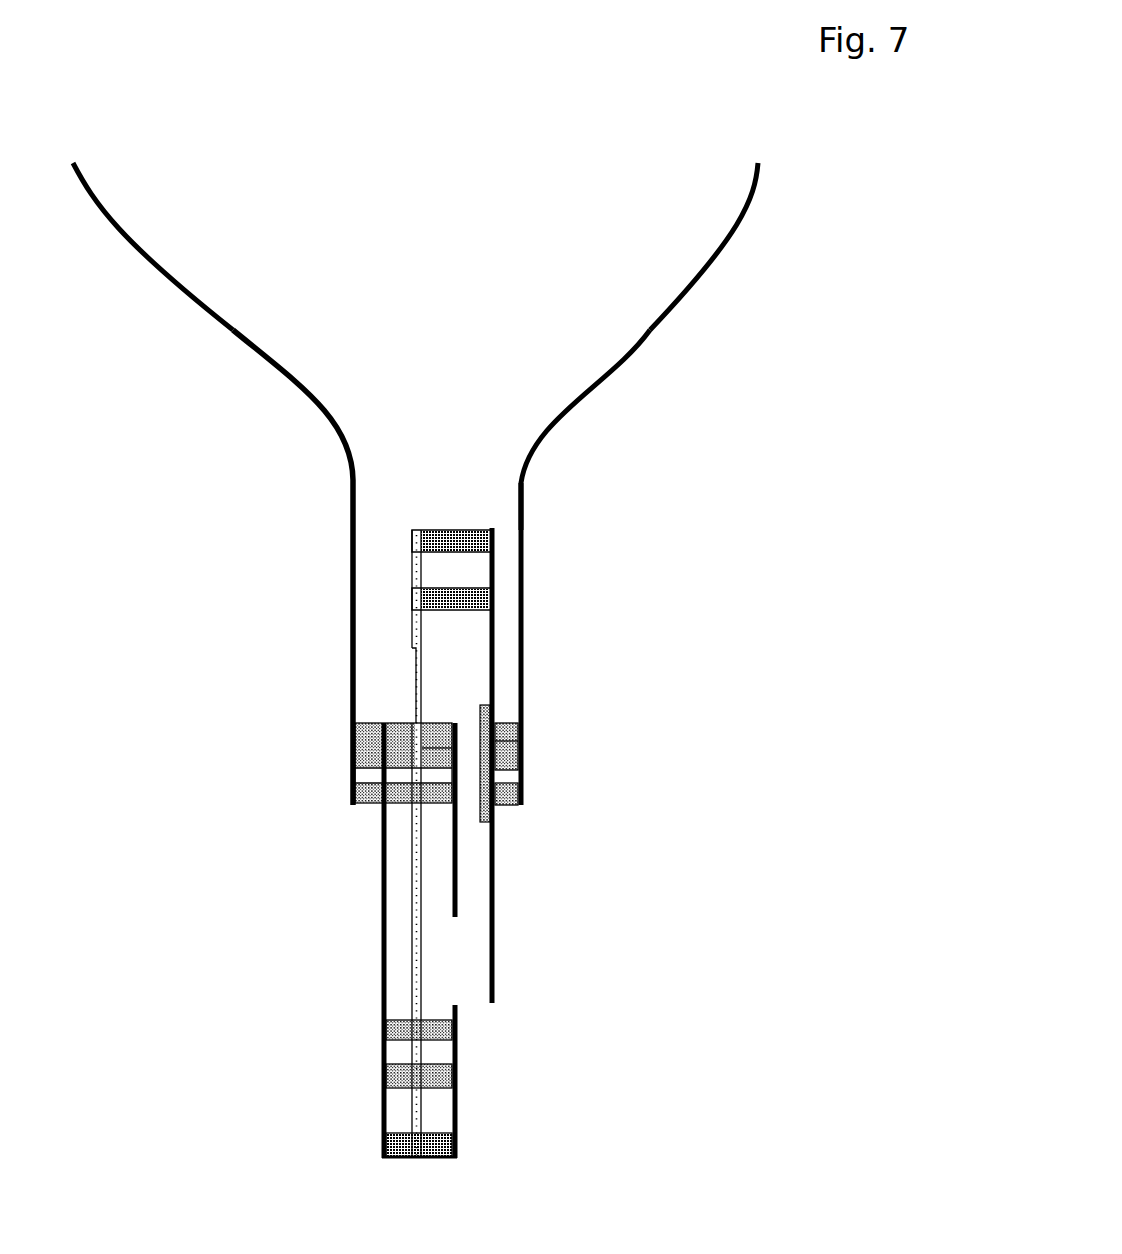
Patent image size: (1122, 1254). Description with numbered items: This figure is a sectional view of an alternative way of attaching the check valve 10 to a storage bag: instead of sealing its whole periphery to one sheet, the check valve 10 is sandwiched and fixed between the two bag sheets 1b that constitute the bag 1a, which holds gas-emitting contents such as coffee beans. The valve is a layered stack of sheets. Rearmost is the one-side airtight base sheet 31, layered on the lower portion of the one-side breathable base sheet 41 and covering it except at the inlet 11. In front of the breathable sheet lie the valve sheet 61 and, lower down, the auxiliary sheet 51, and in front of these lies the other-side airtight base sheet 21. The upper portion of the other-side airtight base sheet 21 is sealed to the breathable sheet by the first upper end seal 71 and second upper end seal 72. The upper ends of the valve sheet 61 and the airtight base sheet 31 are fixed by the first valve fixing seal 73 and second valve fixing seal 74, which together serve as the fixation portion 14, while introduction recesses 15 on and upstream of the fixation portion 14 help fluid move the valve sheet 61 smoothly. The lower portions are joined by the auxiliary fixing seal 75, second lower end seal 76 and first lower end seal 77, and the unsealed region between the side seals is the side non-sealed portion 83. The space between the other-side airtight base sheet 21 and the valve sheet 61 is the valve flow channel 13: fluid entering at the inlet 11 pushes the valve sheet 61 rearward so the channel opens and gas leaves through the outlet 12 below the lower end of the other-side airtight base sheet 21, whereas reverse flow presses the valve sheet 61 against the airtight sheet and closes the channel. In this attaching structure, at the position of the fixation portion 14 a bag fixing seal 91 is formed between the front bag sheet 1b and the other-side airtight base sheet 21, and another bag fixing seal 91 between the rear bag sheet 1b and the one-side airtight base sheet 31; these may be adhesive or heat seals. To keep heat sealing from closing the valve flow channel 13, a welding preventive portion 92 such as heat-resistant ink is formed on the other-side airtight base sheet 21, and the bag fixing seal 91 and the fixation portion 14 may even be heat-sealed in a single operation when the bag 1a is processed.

The bag 1a is at (745, 216).
The bag sheet 1b is at (233, 330).
The check valve 10 is at (492, 528).
The inlet 11 is at (420, 628).
The first upper end seal 71 is at (443, 540).
The second upper end seal 72 is at (438, 598).
The side non-sealed portion 83 is at (438, 565).
The introduction recess 15 is at (412, 702).
The one-side breathable base sheet 41 is at (438, 645).
The other-side airtight base sheet 21 is at (495, 637).
The welding preventive portion 92 is at (490, 717).
The bag fixing seal 91 is at (365, 757).
The first valve fixing seal 73 is at (438, 755).
The second valve fixing seal 74 is at (438, 790).
The fixation portion 14 is at (652, 732).
The valve sheet 61 is at (458, 845).
The valve flow channel 13 is at (478, 873).
The one-side airtight base sheet 31 is at (383, 950).
The outlet 12 is at (472, 1005).
The auxiliary sheet 51 is at (458, 1107).
The auxiliary fixing seal 75 is at (400, 1020).
The second lower end seal 76 is at (400, 1080).
The first lower end seal 77 is at (402, 1150).